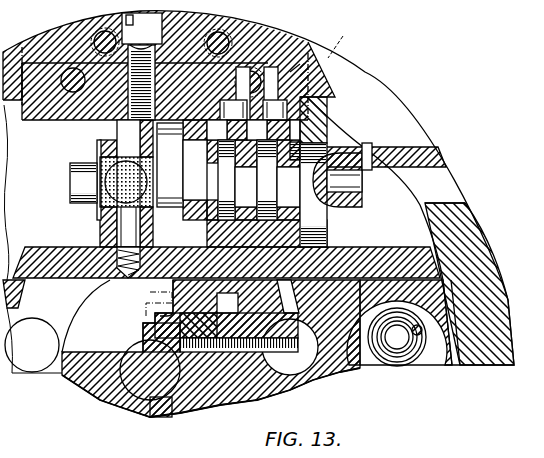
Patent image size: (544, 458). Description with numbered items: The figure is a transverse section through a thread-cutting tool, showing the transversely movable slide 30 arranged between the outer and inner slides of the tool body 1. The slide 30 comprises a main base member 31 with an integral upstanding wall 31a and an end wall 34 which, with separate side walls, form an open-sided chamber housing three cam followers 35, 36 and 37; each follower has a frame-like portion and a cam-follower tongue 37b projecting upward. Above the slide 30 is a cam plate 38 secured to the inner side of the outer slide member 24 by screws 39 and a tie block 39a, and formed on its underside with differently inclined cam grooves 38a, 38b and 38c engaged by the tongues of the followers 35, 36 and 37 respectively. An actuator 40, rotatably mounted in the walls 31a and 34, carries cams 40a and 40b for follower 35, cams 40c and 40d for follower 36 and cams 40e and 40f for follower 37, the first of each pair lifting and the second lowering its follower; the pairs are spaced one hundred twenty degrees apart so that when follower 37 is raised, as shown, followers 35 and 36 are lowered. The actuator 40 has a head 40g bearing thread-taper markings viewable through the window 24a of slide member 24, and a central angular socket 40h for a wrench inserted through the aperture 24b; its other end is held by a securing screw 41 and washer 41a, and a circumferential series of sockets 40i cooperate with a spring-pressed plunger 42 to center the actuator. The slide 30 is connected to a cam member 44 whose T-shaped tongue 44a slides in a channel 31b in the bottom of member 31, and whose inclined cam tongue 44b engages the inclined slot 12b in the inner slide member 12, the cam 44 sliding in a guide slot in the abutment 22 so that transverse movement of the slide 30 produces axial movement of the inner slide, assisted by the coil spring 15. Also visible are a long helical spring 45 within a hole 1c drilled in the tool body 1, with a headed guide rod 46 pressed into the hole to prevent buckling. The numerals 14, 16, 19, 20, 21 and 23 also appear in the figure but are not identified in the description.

The tool body 1 is at (343, 372).
The hole 1c is at (447, 362).
The inner slide member 12 is at (203, 419).
The groove or slot 12b is at (135, 344).
The slide block 14 is at (155, 364).
The coil spring 15 is at (228, 327).
The cover block 16 is at (42, 118).
The valve block 19 is at (165, 164).
The port 20 is at (228, 104).
The port 21 is at (274, 166).
The abutment 22 is at (118, 405).
The key 23 is at (162, 419).
The slide member 24 is at (33, 45).
The opening or window 24a is at (365, 107).
The aperture 24b is at (455, 185).
The transversely movable slide 30 is at (45, 247).
The main base member 31 is at (72, 284).
The upstanding wall 31a is at (110, 244).
The channel 31b is at (146, 302).
The end wall 34 is at (226, 262).
The cam follower 35 is at (273, 130).
The cam follower 36 is at (221, 130).
The cam follower 37 is at (157, 83).
The cam-follower tongue 37b is at (166, 58).
The cam plate 38 is at (268, 63).
The cam groove 38a is at (292, 60).
The cam groove 38b is at (246, 68).
The cam groove 38c is at (200, 43).
The screw 39 is at (94, 29).
The tie block 39a is at (345, 39).
The actuator 40 is at (368, 213).
The cam 40a is at (288, 186).
The cam 40b is at (269, 195).
The cam 40c is at (256, 180).
The cam 40d is at (267, 239).
The cam 40e is at (196, 171).
The cam 40f is at (238, 193).
The head 40g is at (364, 144).
The central angular socket 40h is at (363, 190).
The depressions or sockets 40i is at (97, 148).
The securing screw 41 is at (70, 183).
The washer 41a is at (97, 161).
The spring-pressed plunger 42 is at (100, 211).
The cam member 44 is at (150, 320).
The tongue 44a is at (283, 294).
The cam tongue 44b is at (280, 376).
The helical spring 45 is at (415, 357).
The headed guide rod 46 is at (397, 350).